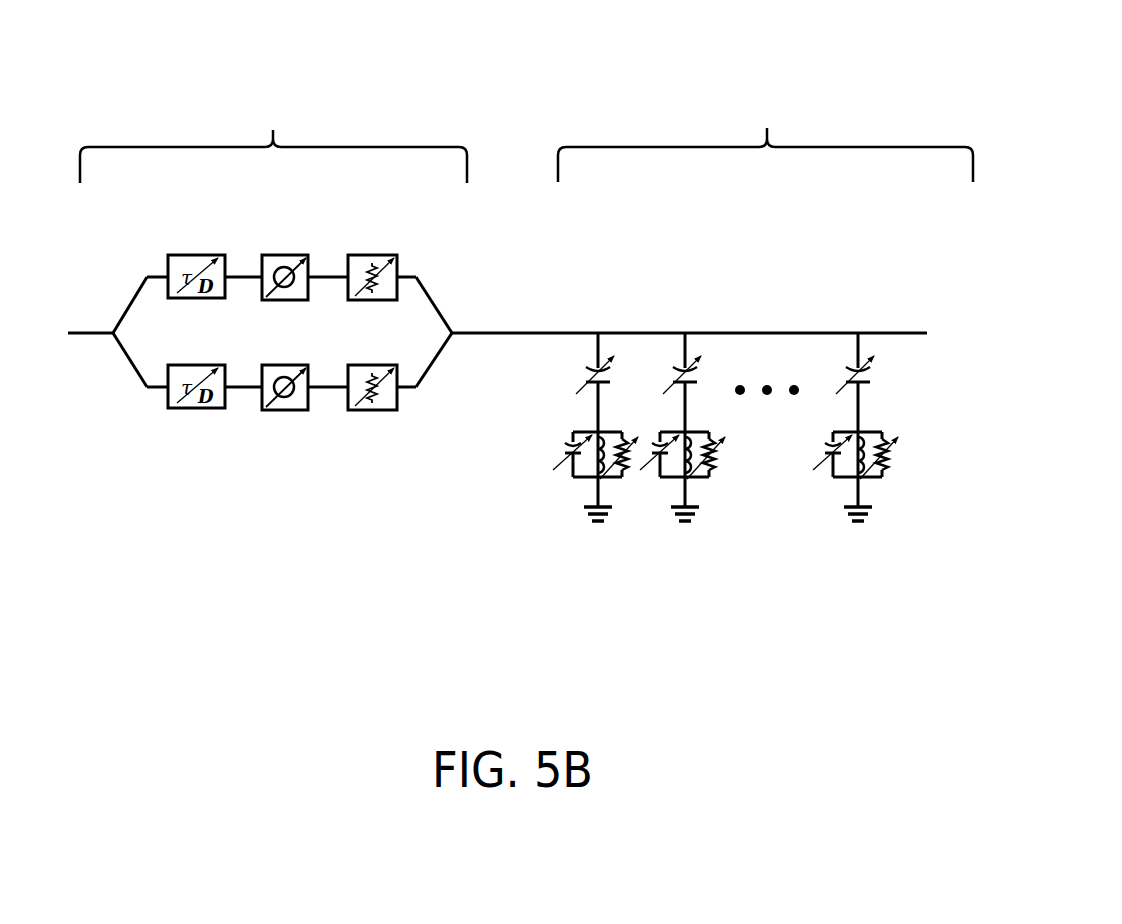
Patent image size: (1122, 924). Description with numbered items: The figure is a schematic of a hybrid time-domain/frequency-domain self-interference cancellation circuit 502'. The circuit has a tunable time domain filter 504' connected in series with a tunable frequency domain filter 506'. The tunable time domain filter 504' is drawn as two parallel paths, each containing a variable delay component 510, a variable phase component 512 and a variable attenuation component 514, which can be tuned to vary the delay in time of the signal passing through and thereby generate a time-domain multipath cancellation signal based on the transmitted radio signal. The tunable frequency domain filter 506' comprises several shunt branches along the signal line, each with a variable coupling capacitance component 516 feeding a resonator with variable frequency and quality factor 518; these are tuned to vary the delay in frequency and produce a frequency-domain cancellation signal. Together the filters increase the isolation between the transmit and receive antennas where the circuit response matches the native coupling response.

The hybrid time-domain/frequency-domain SIC circuit 502' is at (515, 346).
The tunable time domain filter 504' is at (269, 347).
The tunable frequency domain filter 506' is at (754, 387).
The variable delay component 510 is at (167, 415).
The variable phase component 512 is at (277, 425).
The variable attenuation component 514 is at (395, 425).
The variable coupling capacitance component 516 is at (783, 231).
The resonator with variable frequency and quality factor 518 is at (832, 500).